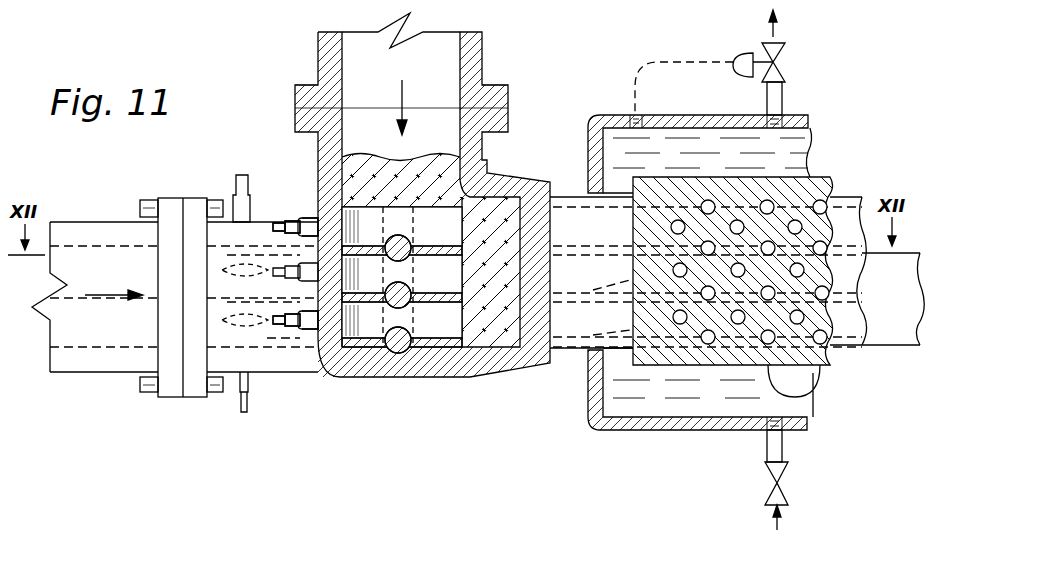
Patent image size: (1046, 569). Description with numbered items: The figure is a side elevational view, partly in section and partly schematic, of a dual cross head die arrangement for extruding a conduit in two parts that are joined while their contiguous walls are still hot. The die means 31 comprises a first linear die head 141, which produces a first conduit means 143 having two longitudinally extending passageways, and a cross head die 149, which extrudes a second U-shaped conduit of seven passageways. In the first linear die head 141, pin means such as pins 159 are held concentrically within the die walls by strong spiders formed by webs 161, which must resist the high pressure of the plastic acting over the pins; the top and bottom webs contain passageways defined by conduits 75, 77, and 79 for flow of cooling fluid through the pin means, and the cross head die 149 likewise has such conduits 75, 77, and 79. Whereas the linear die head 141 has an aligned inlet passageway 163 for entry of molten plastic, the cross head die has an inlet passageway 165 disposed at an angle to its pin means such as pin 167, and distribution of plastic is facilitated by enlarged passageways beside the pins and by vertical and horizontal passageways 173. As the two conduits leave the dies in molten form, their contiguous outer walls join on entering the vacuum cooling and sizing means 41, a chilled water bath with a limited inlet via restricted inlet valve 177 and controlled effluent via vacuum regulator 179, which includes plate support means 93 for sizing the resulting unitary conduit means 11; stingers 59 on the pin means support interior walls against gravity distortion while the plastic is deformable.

The conduit means 11 is at (578, 350).
The die means 31 is at (537, 96).
The vacuum cooling and sizing means 41 is at (605, 435).
The stingers 59 is at (698, 365).
The conduit 75 is at (279, 328).
The conduit 77 is at (290, 330).
The conduit 79 is at (312, 335).
The plate support means 93 is at (797, 398).
The first linear die head 141 is at (304, 330).
The first conduit means 143 is at (895, 346).
The cross head die 149 is at (538, 198).
The pins 159 is at (213, 277).
The webs 161 is at (247, 250).
The inlet passageway 163 is at (122, 345).
The inlet passageway 165 is at (342, 72).
The pin 167 is at (440, 230).
The vertical and horizontal passageways 173 is at (412, 240).
The restricted inlet valve 177 is at (770, 485).
The vacuum regulator 179 is at (787, 70).